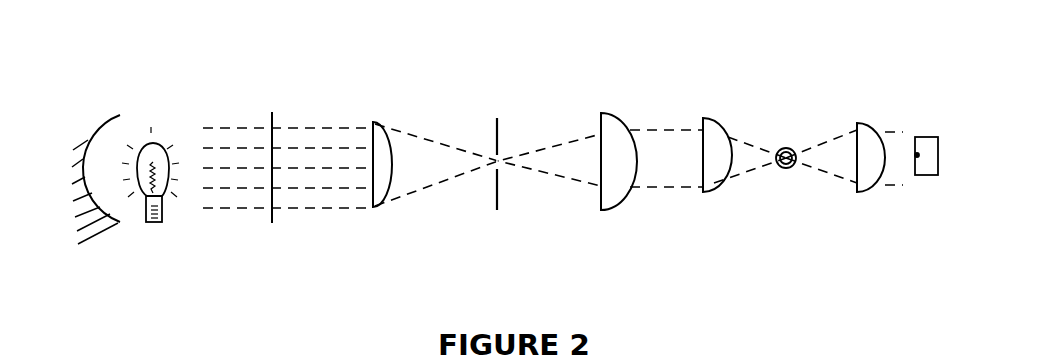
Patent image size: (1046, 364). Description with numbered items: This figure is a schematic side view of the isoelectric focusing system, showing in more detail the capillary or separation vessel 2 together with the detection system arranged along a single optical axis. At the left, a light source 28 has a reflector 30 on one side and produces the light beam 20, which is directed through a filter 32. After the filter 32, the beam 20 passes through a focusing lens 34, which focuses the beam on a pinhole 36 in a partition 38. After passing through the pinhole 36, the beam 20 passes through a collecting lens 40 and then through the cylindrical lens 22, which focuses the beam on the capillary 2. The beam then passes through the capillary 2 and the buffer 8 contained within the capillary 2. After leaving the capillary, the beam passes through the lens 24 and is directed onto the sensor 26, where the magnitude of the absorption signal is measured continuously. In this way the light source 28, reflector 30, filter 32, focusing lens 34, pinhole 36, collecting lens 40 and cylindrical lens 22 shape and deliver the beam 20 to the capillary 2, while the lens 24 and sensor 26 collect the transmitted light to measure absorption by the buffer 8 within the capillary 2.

The capillary 2 is at (787, 147).
The buffer 8 is at (786, 169).
The light beam 20 is at (210, 127).
The cylindrical lens 22 is at (703, 187).
The lens 24 is at (860, 130).
The sensor 26 is at (928, 177).
The light source 28 is at (155, 224).
The reflector 30 is at (113, 116).
The filter 32 is at (273, 113).
The focusing lens 34 is at (374, 122).
The pinhole 36 is at (498, 162).
The partition 38 is at (480, 132).
The collecting lens 40 is at (607, 123).